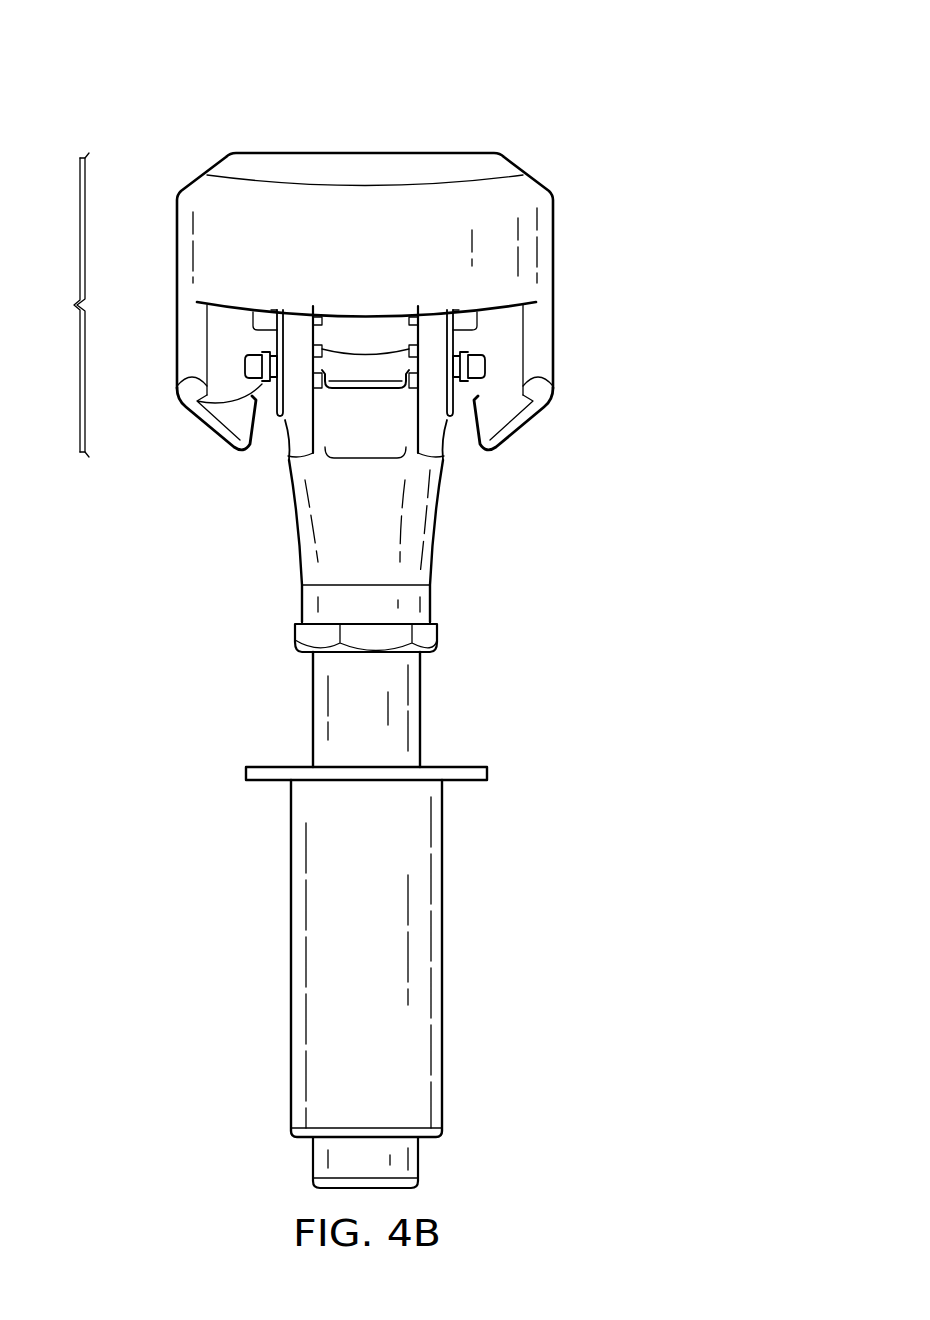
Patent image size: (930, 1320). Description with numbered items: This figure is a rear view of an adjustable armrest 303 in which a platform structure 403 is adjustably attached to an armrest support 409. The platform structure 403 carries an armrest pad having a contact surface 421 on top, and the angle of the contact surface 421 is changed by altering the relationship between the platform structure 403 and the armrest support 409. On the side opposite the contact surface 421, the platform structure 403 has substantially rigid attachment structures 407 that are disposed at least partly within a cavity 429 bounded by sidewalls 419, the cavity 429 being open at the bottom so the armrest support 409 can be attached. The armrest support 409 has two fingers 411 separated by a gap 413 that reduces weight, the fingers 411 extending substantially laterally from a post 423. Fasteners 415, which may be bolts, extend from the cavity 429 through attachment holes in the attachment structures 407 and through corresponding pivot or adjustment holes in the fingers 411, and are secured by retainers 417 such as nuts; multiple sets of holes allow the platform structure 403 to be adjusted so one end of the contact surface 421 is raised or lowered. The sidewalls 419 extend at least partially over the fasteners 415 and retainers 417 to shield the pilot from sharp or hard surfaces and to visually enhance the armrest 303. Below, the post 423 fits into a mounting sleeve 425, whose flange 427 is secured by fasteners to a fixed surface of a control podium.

The armrest 303 is at (568, 66).
The platform structure 403 is at (55, 305).
The attachment structures 407 is at (315, 409).
The armrest support 409 is at (432, 530).
The fingers 411 is at (290, 428).
The gap 413 is at (364, 480).
The fasteners 415 is at (247, 362).
The retainers 417 is at (207, 397).
The sidewalls 419 is at (177, 381).
The contact surface 421 is at (300, 152).
The post 423 is at (420, 700).
The mounting sleeve 425 is at (442, 955).
The flange 427 is at (487, 772).
The cavity 429 is at (504, 408).